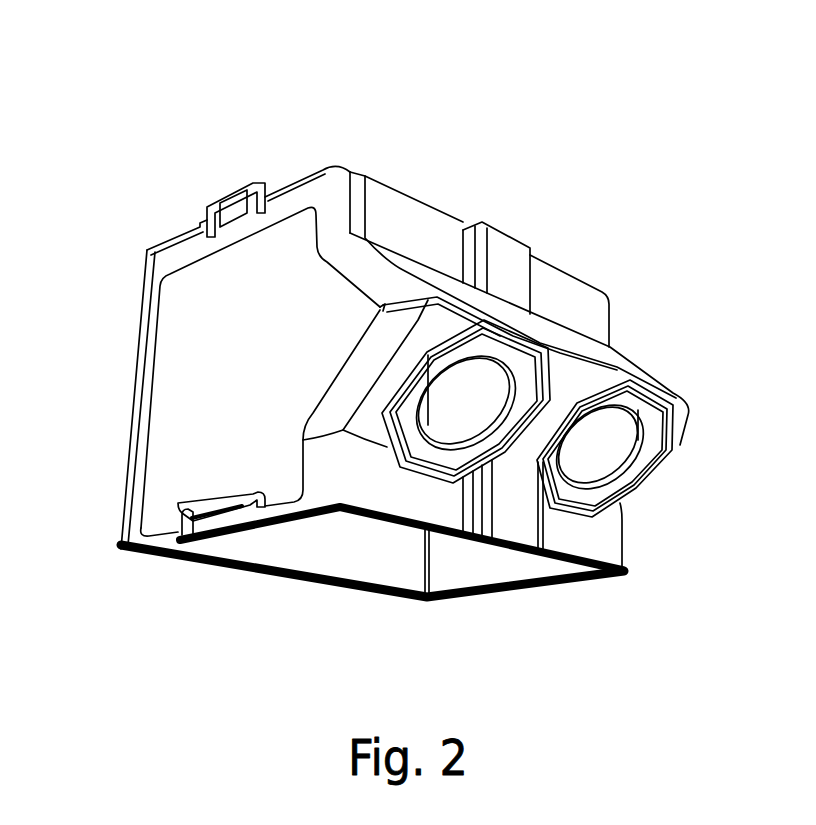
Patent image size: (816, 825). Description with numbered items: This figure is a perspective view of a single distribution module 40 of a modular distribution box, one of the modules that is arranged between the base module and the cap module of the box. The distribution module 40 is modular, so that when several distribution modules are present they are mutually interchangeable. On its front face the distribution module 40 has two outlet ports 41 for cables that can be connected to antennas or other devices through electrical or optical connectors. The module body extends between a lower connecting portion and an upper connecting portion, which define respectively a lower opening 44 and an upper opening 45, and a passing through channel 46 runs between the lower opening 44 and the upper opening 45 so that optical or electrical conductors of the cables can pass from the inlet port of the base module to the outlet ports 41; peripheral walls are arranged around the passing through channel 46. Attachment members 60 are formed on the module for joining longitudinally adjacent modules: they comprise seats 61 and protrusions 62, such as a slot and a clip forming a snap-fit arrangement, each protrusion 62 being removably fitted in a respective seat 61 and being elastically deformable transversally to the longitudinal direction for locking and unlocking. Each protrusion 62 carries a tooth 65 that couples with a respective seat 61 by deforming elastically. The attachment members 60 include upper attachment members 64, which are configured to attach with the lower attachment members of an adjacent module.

The distribution module 40 is at (471, 140).
The outlet port 41 is at (483, 410).
The lower opening 44 is at (276, 528).
The upper opening 45 is at (361, 186).
The passing through channel 46 is at (372, 553).
The attachment member 60 is at (195, 162).
The seat 61 is at (227, 207).
The protrusion 62 is at (180, 509).
The upper attachment member 64 is at (501, 202).
The tooth 65 is at (517, 574).